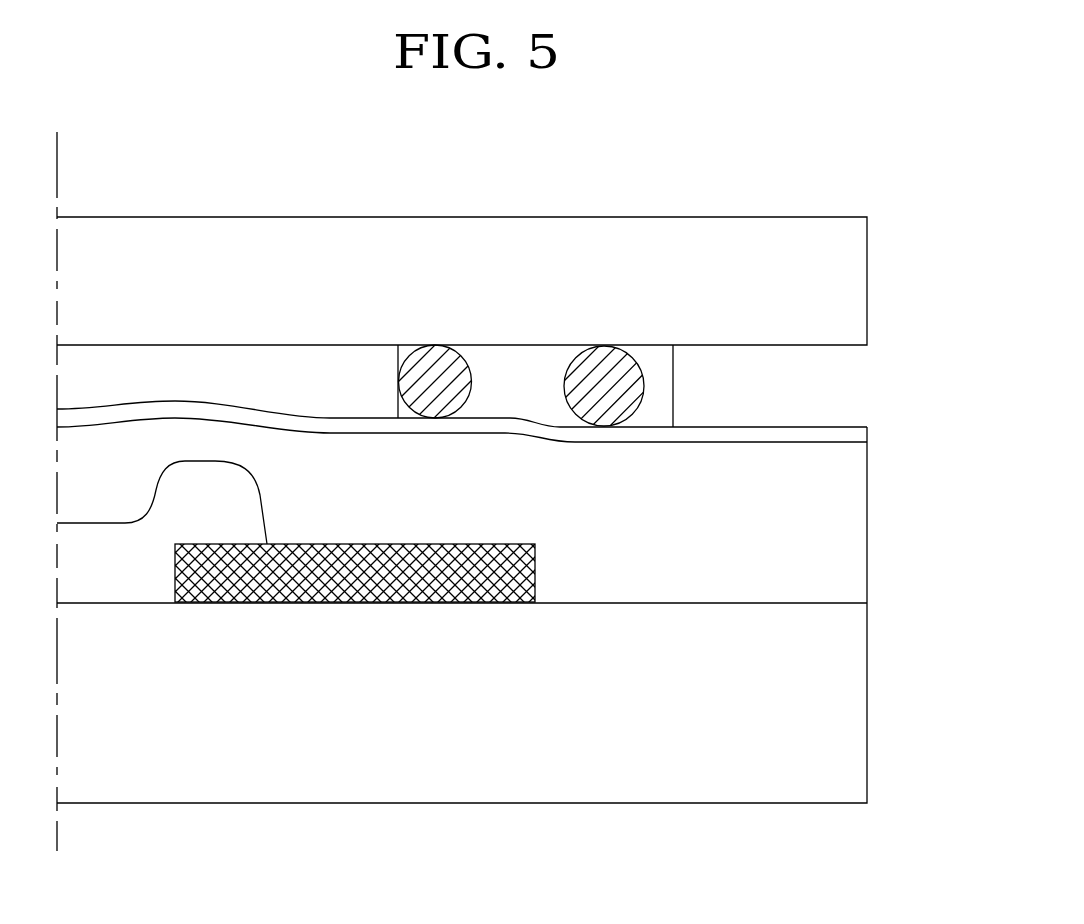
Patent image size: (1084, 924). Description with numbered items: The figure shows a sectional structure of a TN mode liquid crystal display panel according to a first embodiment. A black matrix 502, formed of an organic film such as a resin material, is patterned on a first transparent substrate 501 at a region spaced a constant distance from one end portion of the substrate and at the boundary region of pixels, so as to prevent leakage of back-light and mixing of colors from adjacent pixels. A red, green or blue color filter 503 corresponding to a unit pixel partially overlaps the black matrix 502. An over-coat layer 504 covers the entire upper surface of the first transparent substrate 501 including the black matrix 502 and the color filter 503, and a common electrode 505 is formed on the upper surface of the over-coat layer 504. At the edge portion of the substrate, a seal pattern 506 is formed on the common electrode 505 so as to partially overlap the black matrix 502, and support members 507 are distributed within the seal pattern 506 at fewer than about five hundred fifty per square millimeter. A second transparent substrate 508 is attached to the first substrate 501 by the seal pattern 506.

The first transparent substrate 501 is at (845, 743).
The black matrix 502 is at (332, 573).
The color filter 503 is at (134, 565).
The over-coat layer 504 is at (838, 527).
The common electrode 505 is at (853, 435).
The seal pattern 506 is at (665, 417).
The support member 507 is at (625, 378).
The second transparent substrate 508 is at (838, 287).